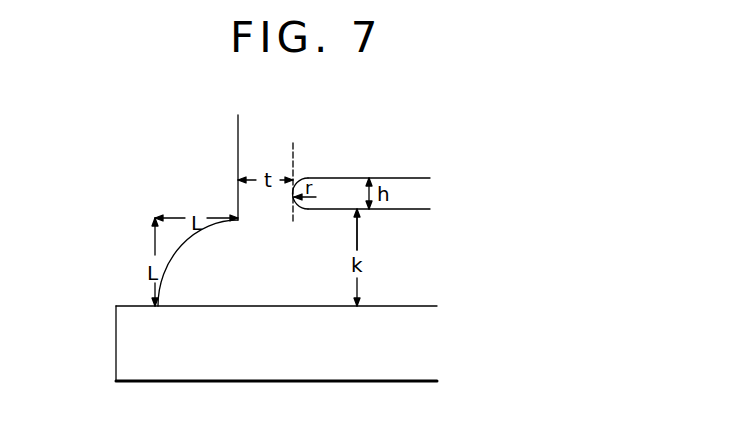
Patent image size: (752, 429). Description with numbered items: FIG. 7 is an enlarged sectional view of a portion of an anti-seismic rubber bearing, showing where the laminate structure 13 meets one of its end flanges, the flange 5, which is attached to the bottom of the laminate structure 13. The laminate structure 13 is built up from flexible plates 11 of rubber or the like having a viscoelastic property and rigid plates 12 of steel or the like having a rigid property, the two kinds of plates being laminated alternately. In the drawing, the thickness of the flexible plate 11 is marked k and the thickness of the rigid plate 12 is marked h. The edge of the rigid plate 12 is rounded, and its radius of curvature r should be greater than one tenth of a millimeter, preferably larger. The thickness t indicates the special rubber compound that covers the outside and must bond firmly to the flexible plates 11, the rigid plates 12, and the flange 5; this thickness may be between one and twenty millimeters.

The flange 5 is at (410, 361).
The flexible plate 11 is at (405, 270).
The rigid plate 12 is at (410, 190).
The laminate structure 13 is at (238, 130).